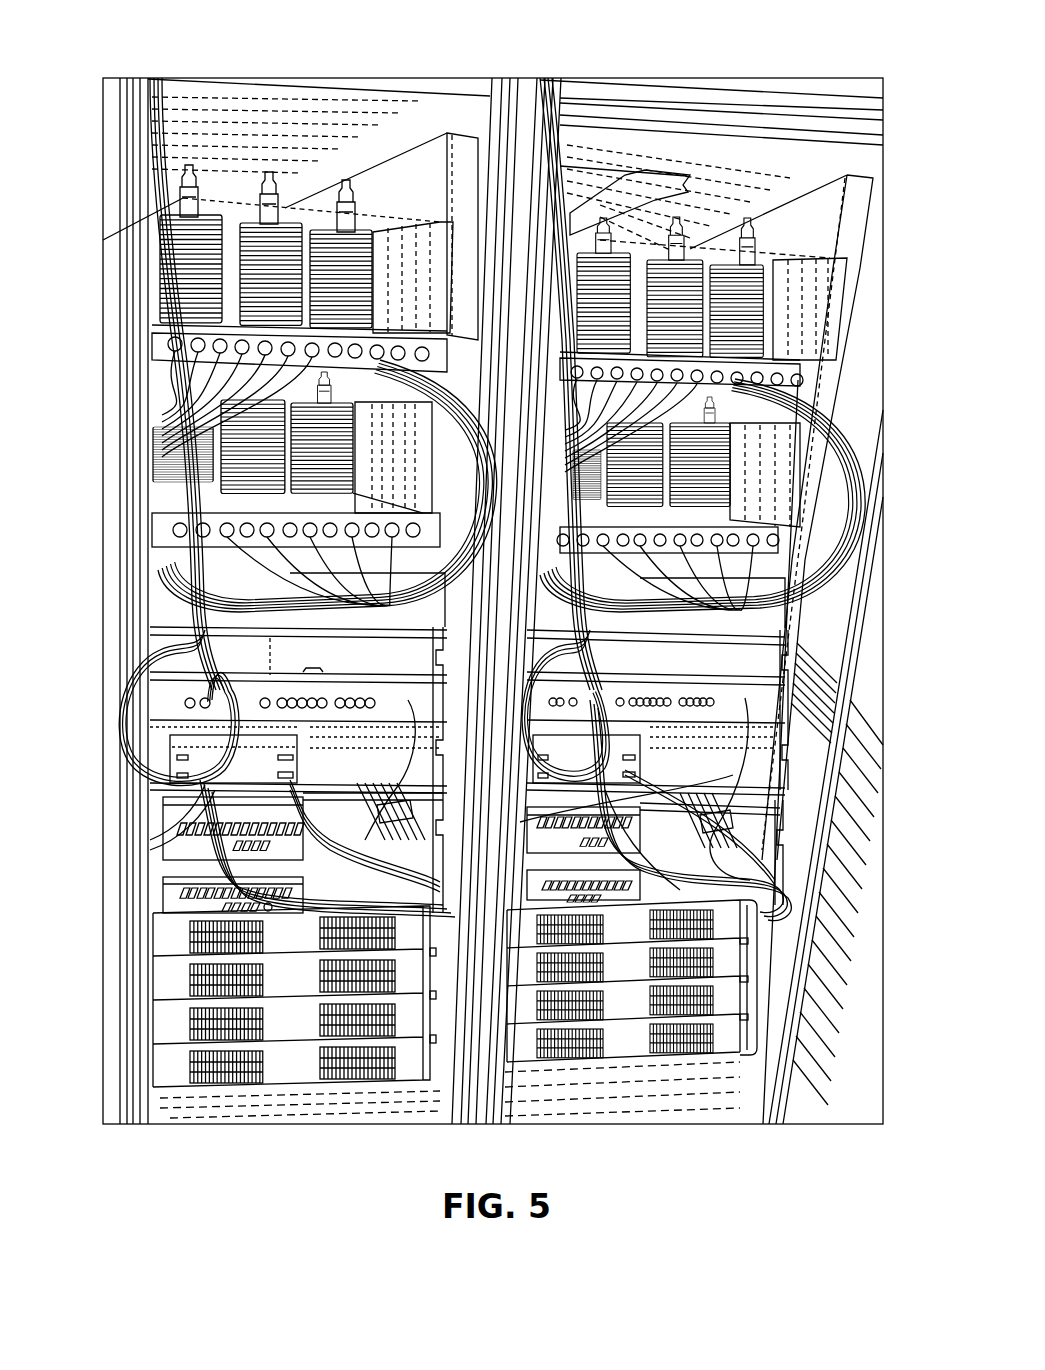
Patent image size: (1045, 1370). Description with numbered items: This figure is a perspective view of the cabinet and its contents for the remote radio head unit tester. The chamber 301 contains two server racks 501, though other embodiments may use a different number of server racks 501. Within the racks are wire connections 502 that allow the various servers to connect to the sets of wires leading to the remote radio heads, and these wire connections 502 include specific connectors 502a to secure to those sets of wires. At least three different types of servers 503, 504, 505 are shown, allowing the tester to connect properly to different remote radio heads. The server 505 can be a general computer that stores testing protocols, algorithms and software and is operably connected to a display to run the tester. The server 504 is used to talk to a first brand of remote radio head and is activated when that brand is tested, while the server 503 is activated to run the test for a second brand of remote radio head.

The chamber 301 is at (890, 100).
The server rack 501 is at (275, 74).
The wire connection 502 is at (152, 340).
The connector 502a is at (160, 215).
The server 503 is at (165, 722).
The server 504 is at (180, 793).
The server 505 is at (180, 920).